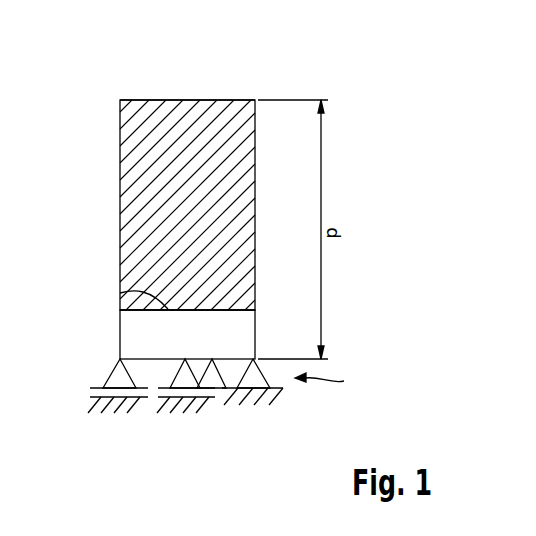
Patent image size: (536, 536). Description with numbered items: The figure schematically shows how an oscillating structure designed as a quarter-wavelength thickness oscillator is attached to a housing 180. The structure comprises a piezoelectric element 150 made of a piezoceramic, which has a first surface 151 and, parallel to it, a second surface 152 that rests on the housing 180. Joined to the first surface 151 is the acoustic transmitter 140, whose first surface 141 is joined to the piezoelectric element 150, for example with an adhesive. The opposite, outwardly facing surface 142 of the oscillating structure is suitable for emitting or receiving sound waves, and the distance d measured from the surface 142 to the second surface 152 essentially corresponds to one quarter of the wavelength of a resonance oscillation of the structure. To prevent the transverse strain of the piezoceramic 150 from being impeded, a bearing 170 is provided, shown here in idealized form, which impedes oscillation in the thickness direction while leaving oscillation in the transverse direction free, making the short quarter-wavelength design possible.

The acoustic transmitter 140 is at (136, 207).
The first surface of the acoustic transmitter 141 is at (198, 325).
The outwardly facing surface 142 is at (188, 100).
The piezoelectric element 150 is at (136, 337).
The first surface of the piezoelectric element 151 is at (120, 293).
The second surface of the piezoelectric element 152 is at (208, 361).
The bearing 170 is at (337, 383).
The housing 180 is at (110, 426).